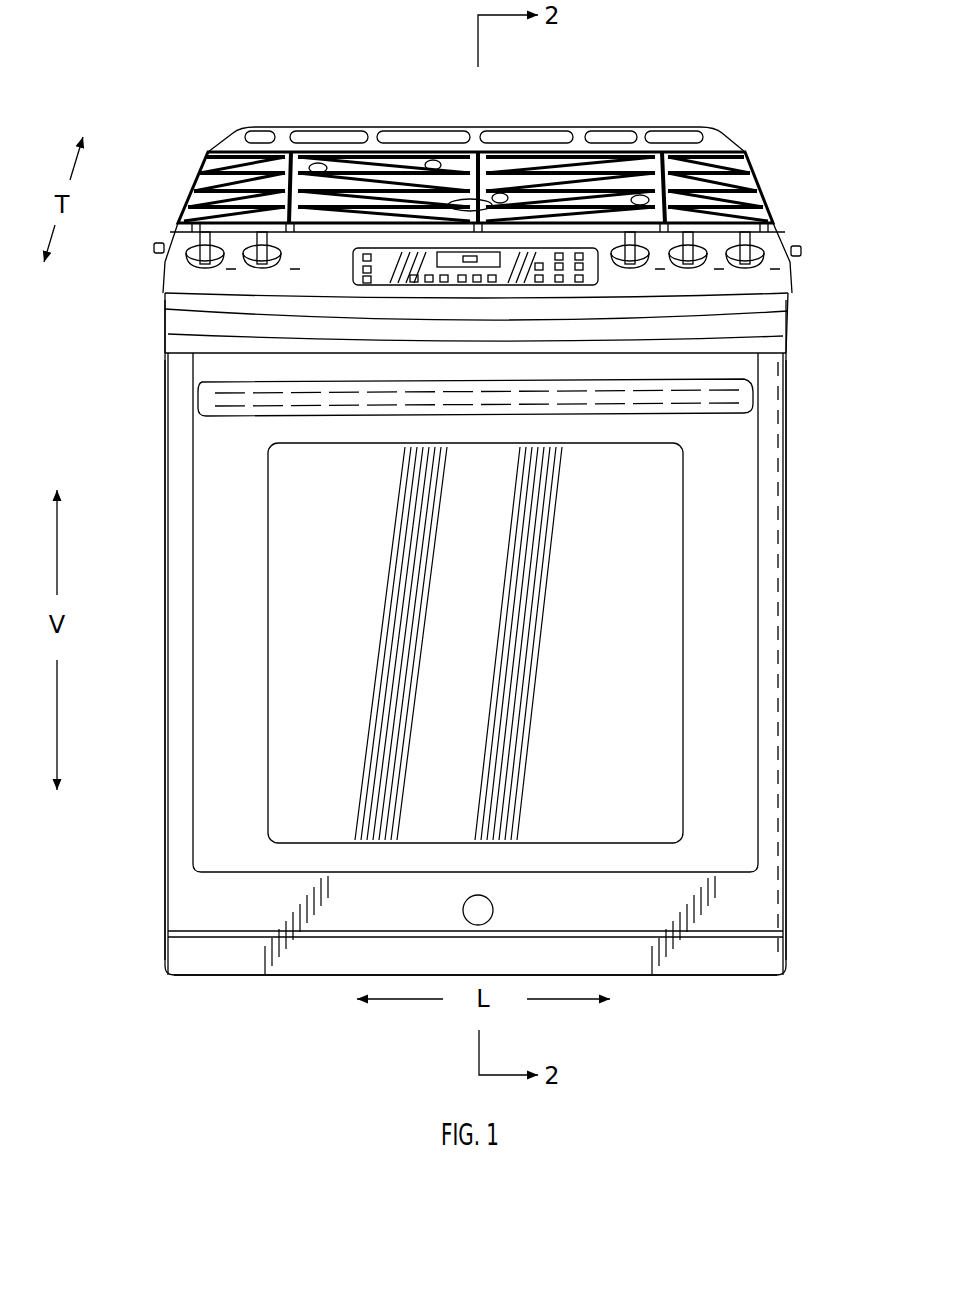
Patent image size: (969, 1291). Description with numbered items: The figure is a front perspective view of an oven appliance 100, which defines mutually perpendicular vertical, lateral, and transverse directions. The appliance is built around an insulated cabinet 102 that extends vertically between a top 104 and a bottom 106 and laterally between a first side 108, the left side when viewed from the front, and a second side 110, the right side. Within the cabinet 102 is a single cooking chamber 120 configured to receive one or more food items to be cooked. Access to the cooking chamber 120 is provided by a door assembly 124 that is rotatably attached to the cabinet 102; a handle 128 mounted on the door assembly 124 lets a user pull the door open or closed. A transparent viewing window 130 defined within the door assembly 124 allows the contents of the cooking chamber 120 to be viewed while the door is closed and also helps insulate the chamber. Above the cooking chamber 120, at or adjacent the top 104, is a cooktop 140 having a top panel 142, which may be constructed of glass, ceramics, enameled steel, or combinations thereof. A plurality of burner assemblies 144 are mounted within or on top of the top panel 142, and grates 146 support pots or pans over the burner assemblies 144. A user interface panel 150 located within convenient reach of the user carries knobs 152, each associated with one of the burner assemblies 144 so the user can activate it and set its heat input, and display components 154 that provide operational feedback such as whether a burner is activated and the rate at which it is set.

The oven appliance 100 is at (158, 128).
The insulated cabinet 102 is at (770, 340).
The top 104 is at (158, 268).
The bottom 106 is at (160, 968).
The first side 108 is at (162, 675).
The second side 110 is at (790, 705).
The cooking chamber 120 is at (720, 488).
The door assembly 124 is at (172, 528).
The handle 128 is at (740, 395).
The transparent viewing window 130 is at (600, 823).
The cooktop 140 is at (728, 150).
The top panel 142 is at (775, 231).
The burner assemblies 144 is at (318, 163).
The grates 146 is at (205, 190).
The user interface panel 150 is at (358, 283).
The knobs 152 is at (262, 266).
The display components 154 is at (496, 256).